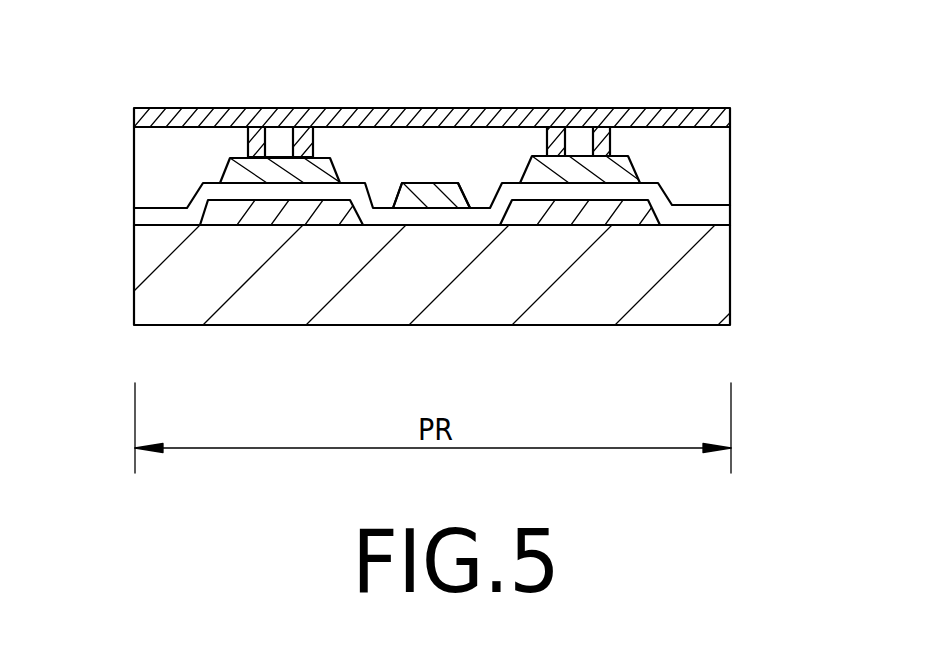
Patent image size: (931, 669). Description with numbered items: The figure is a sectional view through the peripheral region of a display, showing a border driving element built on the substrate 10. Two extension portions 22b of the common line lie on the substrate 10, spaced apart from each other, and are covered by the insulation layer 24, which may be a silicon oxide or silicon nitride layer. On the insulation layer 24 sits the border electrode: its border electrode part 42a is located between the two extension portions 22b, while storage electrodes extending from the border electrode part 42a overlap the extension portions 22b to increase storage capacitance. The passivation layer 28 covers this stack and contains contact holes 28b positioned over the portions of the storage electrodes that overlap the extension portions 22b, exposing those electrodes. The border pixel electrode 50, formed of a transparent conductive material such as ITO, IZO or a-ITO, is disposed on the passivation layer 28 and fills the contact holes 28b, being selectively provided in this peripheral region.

The substrate 10 is at (700, 278).
The insulation layer 24 is at (717, 215).
The passivation layer 28 is at (717, 160).
The contact holes 28b is at (315, 146).
The border pixel electrode 50 is at (640, 107).
The extension portions 22b is at (283, 202).
The border electrode part 42a is at (433, 196).